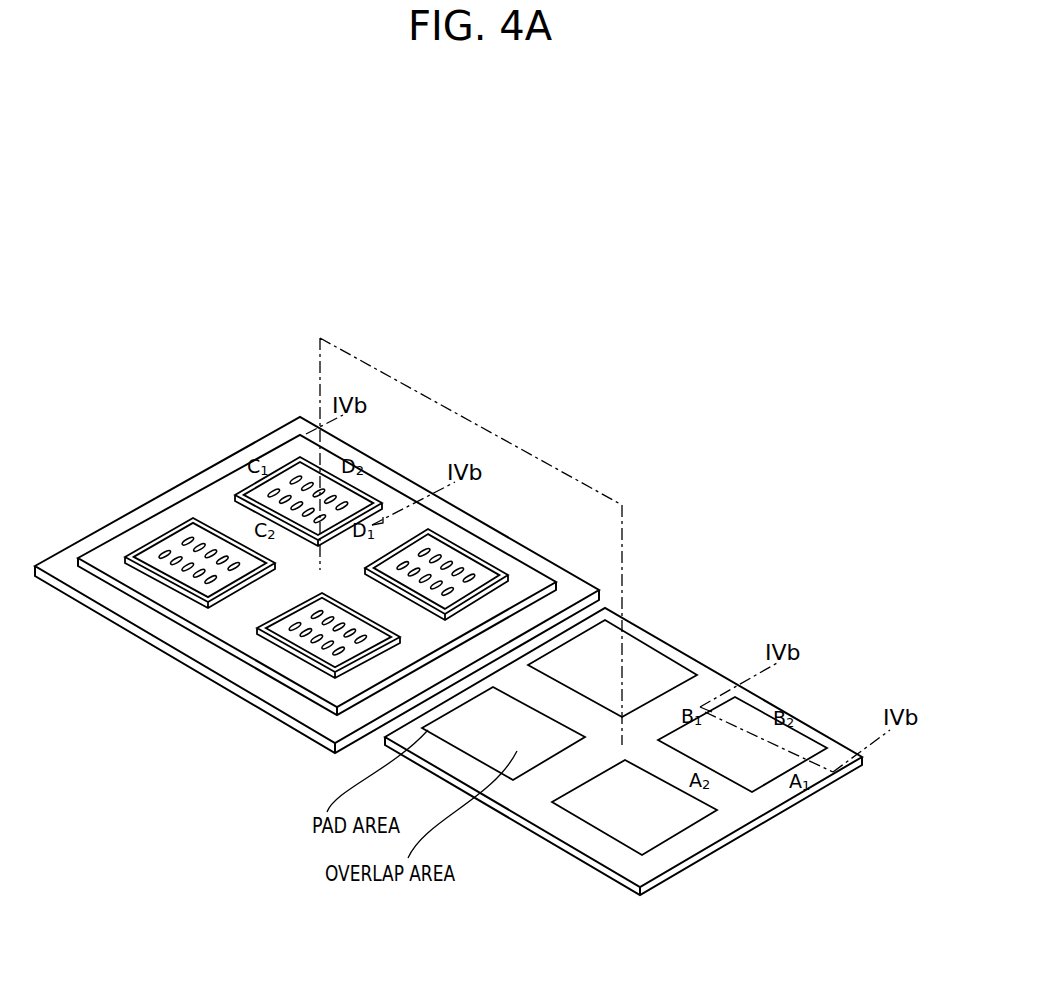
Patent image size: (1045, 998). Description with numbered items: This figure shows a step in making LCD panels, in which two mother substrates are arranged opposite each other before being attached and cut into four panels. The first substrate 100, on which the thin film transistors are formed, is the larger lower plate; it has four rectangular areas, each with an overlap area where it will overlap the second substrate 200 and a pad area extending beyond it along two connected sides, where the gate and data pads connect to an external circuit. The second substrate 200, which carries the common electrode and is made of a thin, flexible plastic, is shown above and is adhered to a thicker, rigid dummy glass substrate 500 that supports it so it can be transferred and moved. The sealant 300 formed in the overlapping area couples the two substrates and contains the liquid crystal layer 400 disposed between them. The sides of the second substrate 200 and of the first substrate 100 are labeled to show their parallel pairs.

The first substrate 100 is at (672, 648).
The second substrate 200 is at (230, 474).
The sealant 300 is at (263, 639).
The liquid crystal layer 400 is at (337, 662).
The dummy glass substrate 500 is at (125, 515).